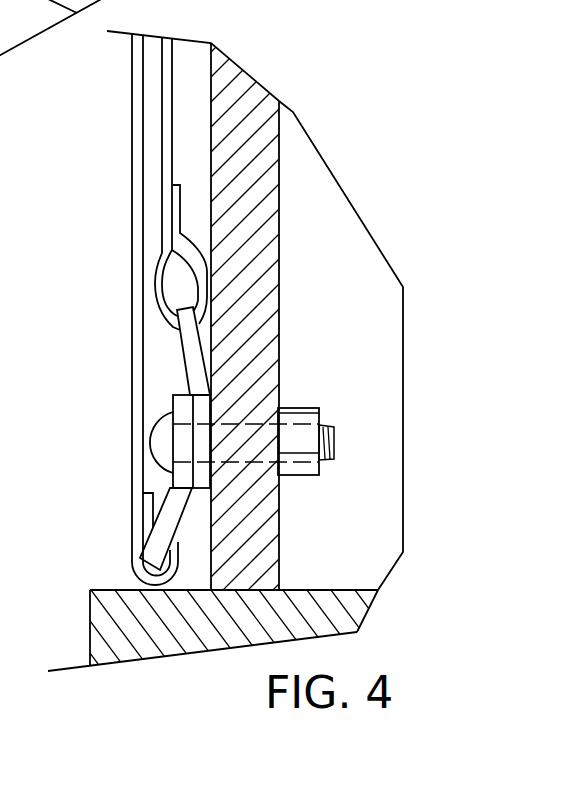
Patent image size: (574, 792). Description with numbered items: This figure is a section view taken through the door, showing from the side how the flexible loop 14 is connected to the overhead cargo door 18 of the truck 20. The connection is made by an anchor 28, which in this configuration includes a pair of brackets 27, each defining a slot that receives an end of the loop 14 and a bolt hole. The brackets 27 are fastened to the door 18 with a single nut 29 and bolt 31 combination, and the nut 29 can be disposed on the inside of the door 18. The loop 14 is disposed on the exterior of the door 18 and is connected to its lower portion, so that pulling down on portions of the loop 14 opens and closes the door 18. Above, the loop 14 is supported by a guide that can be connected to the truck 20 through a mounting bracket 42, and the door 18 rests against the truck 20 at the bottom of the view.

The flexible loop 14 is at (167, 172).
The overhead cargo door 18 is at (268, 155).
The truck 20 is at (118, 627).
The brackets 27 is at (188, 340).
The anchor 28 is at (297, 404).
The nut 29 is at (292, 477).
The bolt 31 is at (157, 444).
The mounting bracket 42 is at (0, 420).